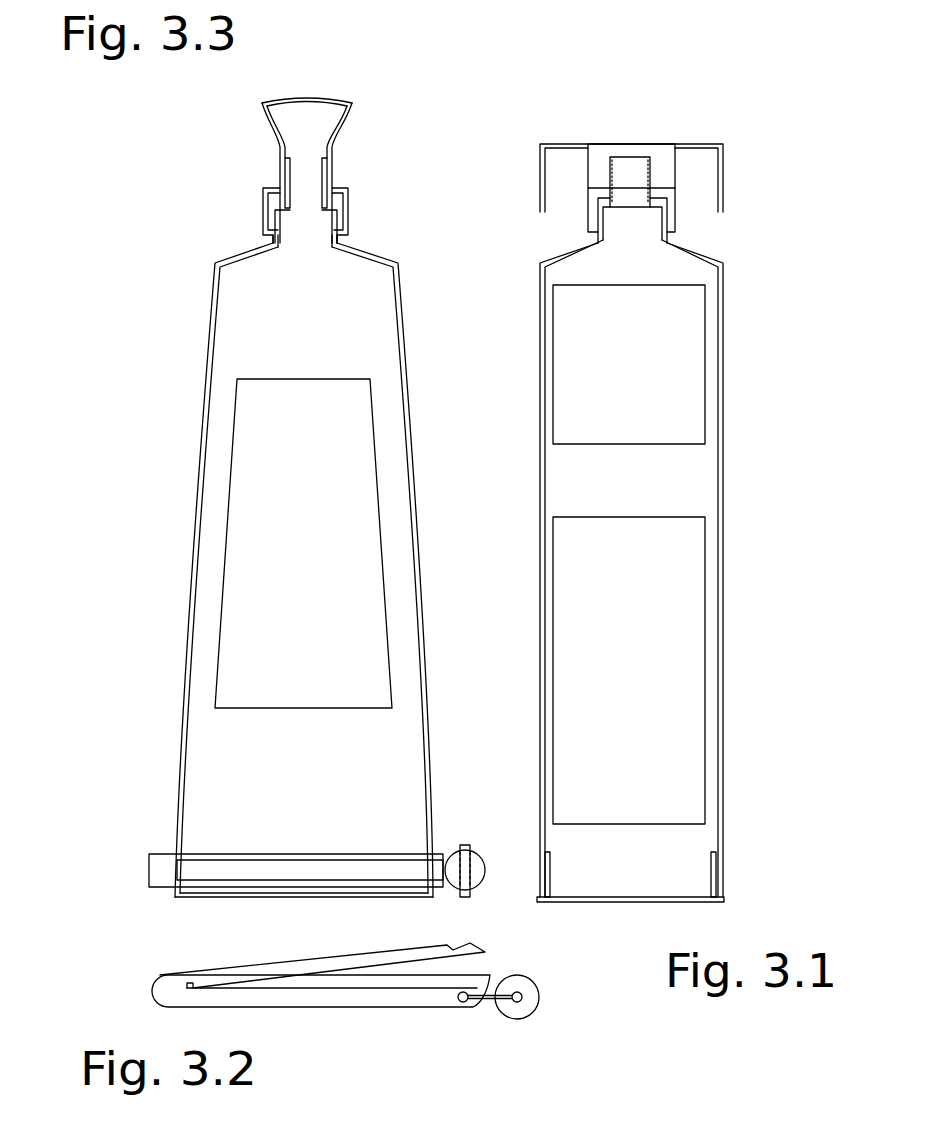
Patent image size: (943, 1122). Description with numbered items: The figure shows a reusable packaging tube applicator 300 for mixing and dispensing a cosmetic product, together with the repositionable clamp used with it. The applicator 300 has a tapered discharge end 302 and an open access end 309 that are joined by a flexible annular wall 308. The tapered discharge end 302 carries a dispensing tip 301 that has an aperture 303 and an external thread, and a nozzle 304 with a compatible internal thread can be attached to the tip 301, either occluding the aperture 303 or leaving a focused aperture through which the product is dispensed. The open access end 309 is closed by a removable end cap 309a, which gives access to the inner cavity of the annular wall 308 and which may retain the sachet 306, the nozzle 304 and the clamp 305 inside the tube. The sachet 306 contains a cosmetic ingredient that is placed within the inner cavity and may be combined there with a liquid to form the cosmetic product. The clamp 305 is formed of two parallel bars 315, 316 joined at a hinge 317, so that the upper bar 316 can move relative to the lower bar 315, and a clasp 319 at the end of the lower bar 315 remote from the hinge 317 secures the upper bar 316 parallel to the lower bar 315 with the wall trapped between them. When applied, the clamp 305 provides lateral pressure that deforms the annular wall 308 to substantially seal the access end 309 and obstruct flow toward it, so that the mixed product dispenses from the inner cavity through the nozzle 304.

In FIG. 3.3, the reusable packaging tube applicator 300 is at (178, 202).
In FIG. 3.1, the reusable packaging tube applicator 300 is at (652, 104).
In FIG. 3.3, the dispensing tip 301 is at (331, 101).
In FIG. 3.3, the tapered discharge end 302 is at (331, 182).
In FIG. 3.1, the tapered discharge end 302 is at (677, 222).
In FIG. 3.3, the aperture 303 is at (311, 72).
In FIG. 3.3, the nozzle 304 is at (277, 218).
In FIG. 3.3, the clamp 305 is at (165, 853).
In FIG. 3.3, the sachet 306 is at (250, 547).
In FIG. 3.1, the sachet 306 is at (676, 446).
In FIG. 3.3, the flexible annular wall 308 is at (180, 738).
In FIG. 3.1, the flexible annular wall 308 is at (722, 668).
In FIG. 3.3, the open access end 309 is at (203, 897).
In FIG. 3.1, the open access end 309 is at (718, 883).
In FIG. 3.1, the end cap 309a is at (637, 902).
In FIG. 3.2, the parallel bar 315 is at (330, 1003).
In FIG. 3.2, the parallel bar 316 is at (332, 955).
In FIG. 3.2, the hinge 317 is at (186, 985).
In FIG. 3.2, the clasp 319 is at (522, 1018).